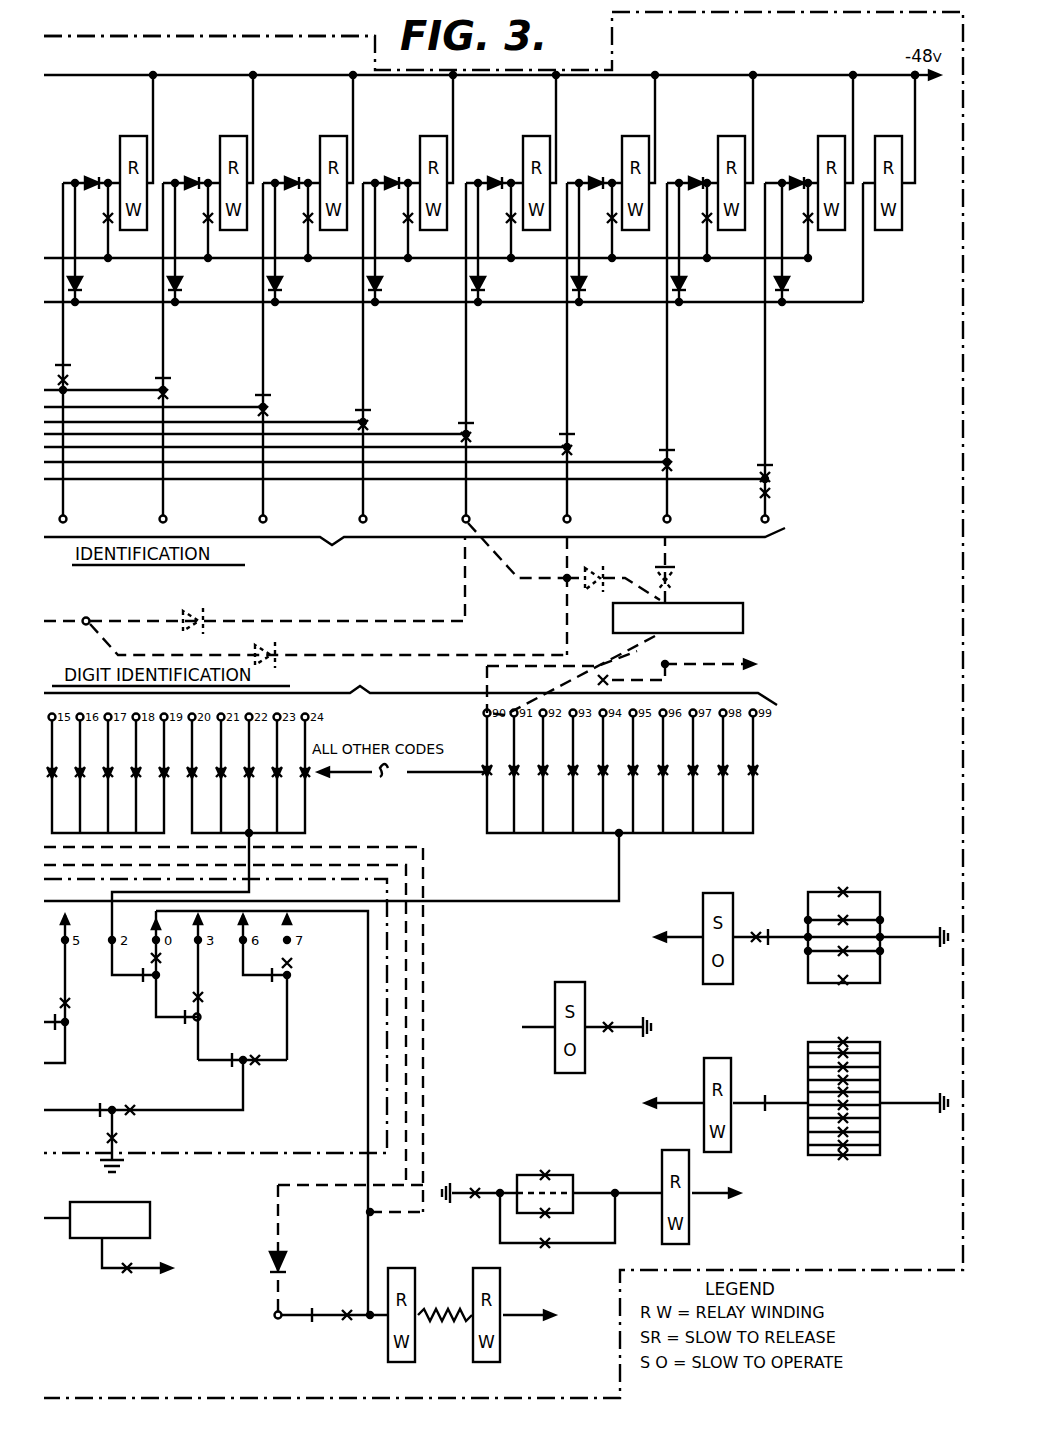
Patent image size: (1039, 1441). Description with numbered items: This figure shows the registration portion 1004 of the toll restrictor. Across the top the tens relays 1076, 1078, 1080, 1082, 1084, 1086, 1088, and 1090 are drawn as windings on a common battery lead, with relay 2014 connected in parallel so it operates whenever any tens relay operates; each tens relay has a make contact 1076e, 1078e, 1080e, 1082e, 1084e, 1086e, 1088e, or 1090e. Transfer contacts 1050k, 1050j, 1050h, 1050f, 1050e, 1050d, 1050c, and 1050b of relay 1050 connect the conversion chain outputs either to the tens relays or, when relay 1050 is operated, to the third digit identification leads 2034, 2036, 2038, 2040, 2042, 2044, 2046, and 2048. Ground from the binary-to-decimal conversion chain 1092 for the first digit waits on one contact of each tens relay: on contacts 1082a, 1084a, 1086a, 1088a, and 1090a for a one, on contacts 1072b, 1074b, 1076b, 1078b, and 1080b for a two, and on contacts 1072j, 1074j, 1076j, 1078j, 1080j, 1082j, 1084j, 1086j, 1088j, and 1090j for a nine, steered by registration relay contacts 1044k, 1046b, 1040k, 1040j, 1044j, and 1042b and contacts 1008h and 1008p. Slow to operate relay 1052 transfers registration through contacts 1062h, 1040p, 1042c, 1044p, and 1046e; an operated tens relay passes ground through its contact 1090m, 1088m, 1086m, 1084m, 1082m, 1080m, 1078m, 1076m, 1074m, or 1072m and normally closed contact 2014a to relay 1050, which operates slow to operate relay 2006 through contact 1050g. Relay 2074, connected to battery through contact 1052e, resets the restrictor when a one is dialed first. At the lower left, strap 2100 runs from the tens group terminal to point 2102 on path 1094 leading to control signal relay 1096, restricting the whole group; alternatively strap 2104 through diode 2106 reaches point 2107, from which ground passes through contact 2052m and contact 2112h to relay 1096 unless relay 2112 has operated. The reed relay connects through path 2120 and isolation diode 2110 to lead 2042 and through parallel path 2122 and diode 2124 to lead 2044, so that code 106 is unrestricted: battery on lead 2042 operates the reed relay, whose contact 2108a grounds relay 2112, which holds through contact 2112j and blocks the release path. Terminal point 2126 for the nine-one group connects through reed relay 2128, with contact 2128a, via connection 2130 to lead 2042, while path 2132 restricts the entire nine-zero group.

The registration portion 1004 is at (184, 34).
The tens relay 1076 is at (121, 136).
The tens relay 1078 is at (221, 136).
The tens relay 1080 is at (321, 136).
The tens relay 1082 is at (421, 136).
The tens relay 1084 is at (524, 136).
The tens relay 1086 is at (623, 136).
The tens relay 1088 is at (719, 136).
The tens relay 1090 is at (819, 136).
The relay 2014 is at (887, 136).
The tens relay contact 1076e is at (108, 224).
The tens relay contact 1078e is at (208, 224).
The tens relay contact 1080e is at (308, 224).
The tens relay contact 1082e is at (408, 224).
The tens relay contact 1084e is at (511, 224).
The tens relay contact 1086e is at (612, 224).
The tens relay contact 1088e is at (707, 224).
The tens relay contact 1090e is at (808, 224).
The relay contact 1050k is at (66, 378).
The relay contact 1050j is at (166, 391).
The relay contact 1050h is at (266, 408).
The relay contact 1050f is at (366, 422).
The relay contact 1050e is at (469, 434).
The relay contact 1050d is at (570, 447).
The relay contact 1050c is at (670, 462).
The relay contact 1050b is at (768, 478).
The third digit identification lead 2034 is at (65, 500).
The third digit identification lead 2036 is at (165, 500).
The third digit identification lead 2038 is at (265, 500).
The third digit identification lead 2040 is at (365, 500).
The third digit identification lead 2042 is at (468, 500).
The third digit identification lead 2044 is at (569, 500).
The third digit identification lead 2046 is at (669, 500).
The third digit identification lead 2048 is at (770, 498).
The path 2120 is at (112, 618).
The isolation diode 2110 is at (192, 610).
The parallel path 2122 is at (160, 654).
The isolation diode 2124 is at (268, 650).
The connection 2130 is at (565, 581).
The reed relay 2128 is at (745, 608).
The path 2132 is at (648, 652).
The terminal point 2126 is at (486, 712).
The tens relay contact 1082a is at (56, 768).
The tens relay contact 1084a is at (83, 777).
The tens relay contact 1086a is at (111, 768).
The tens relay contact 1088a is at (139, 777).
The tens relay contact 1090a is at (176, 764).
The tens relay contact 1072b is at (195, 777).
The tens relay contact 1074b is at (224, 768).
The tens relay contact 1076b is at (252, 777).
The tens relay contact 1078b is at (307, 778).
The tens relay contact 1080b is at (281, 775).
The tens relay contact 1072j is at (486, 776).
The tens relay contact 1074j is at (517, 766).
The tens relay contact 1076j is at (546, 776).
The tens relay contact 1078j is at (576, 766).
The tens relay contact 1080j is at (606, 776).
The tens relay contact 1082j is at (636, 766).
The tens relay contact 1084j is at (666, 776).
The tens relay contact 1086j is at (696, 766).
The tens relay contact 1088j is at (727, 774).
The tens relay contact 1090j is at (756, 766).
The strap 2100 is at (424, 968).
The binary-to-decimal conversion chain 1092 is at (406, 1043).
The strap 2104 is at (388, 1094).
The registration relay contact 1044k is at (68, 1022).
The registration relay contact 1046b is at (150, 977).
The registration relay contact 1040k is at (200, 1015).
The registration relay contact 1040j is at (290, 972).
The registration relay contact 1044j is at (250, 1065).
The registration relay contact 1042b is at (116, 1108).
The relay contact 1008h is at (116, 1138).
The slow to operate relay 1052 is at (733, 893).
The relay contact 1062h is at (758, 941).
The registration relay contact 1040p is at (845, 887).
The registration relay contact 1042c is at (855, 917).
The registration relay contact 1044p is at (850, 953).
The registration relay contact 1046e is at (852, 983).
The relay 1050 is at (731, 1068).
The relay contact 2014a is at (766, 1112).
The tens relay contact 1090m is at (842, 1040).
The tens relay contact 1088m is at (836, 1052).
The tens relay contact 1086m is at (850, 1066).
The tens relay contact 1084m is at (836, 1079).
The tens relay contact 1082m is at (850, 1091).
The tens relay contact 1080m is at (850, 1104).
The tens relay contact 1078m is at (850, 1118).
The tens relay contact 1074m is at (850, 1133).
The tens relay contact 1076m is at (836, 1146).
The tens relay contact 1072m is at (850, 1157).
The slow to operate relay 2006 is at (585, 992).
The relay contact 1050g is at (610, 1032).
The unrestricted code 106 is at (534, 1115).
The relay contact 1008p is at (475, 1188).
The reed relay contact 2108a is at (545, 1170).
The reed relay contact 2128a is at (560, 1193).
The holding contact 2112j is at (548, 1248).
The relay 2112 is at (690, 1163).
The relay 2074 is at (150, 1218).
The relay contact 1052e is at (128, 1273).
The point 2102 is at (368, 1212).
The diode 2106 is at (283, 1260).
The point 2107 is at (274, 1315).
The relay contact 2112h is at (313, 1325).
The relay contact 2052m is at (348, 1310).
The path 1094 is at (370, 1225).
The control signal providing relay 1096 is at (420, 1270).